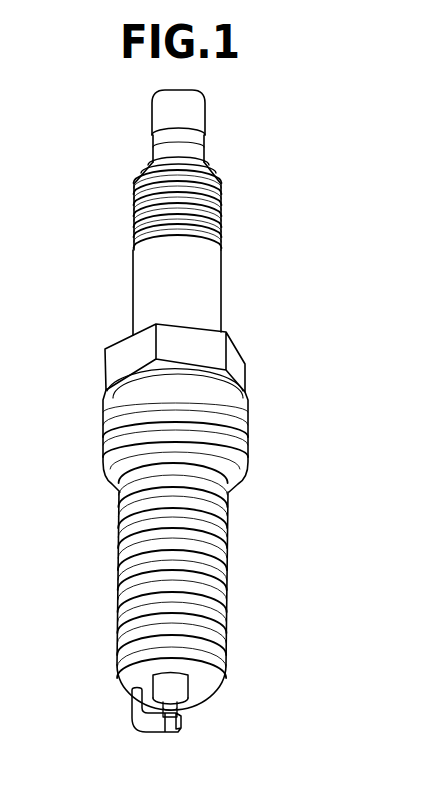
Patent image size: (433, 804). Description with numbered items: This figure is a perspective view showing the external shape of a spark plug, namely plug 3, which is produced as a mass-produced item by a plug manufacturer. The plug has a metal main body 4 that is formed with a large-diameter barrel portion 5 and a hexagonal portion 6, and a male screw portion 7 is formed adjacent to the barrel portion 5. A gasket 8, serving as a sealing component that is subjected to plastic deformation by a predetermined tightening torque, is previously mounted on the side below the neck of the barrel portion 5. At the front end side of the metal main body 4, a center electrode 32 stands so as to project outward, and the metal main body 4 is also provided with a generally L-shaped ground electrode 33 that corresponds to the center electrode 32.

The plug 3 is at (250, 303).
The metal main body 4 is at (140, 677).
The large-diameter barrel portion 5 is at (240, 418).
The hexagonal portion 6 is at (117, 362).
The male screw portion 7 is at (225, 562).
The gasket 8 is at (108, 457).
The center electrode 32 is at (178, 685).
The ground electrode 33 is at (143, 725).